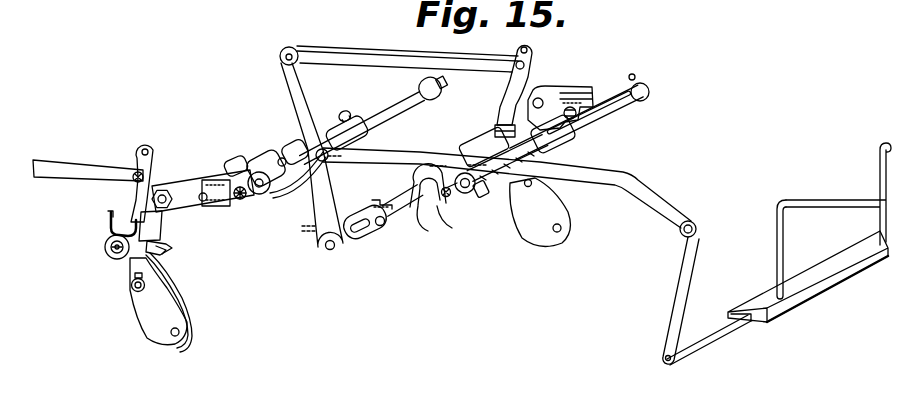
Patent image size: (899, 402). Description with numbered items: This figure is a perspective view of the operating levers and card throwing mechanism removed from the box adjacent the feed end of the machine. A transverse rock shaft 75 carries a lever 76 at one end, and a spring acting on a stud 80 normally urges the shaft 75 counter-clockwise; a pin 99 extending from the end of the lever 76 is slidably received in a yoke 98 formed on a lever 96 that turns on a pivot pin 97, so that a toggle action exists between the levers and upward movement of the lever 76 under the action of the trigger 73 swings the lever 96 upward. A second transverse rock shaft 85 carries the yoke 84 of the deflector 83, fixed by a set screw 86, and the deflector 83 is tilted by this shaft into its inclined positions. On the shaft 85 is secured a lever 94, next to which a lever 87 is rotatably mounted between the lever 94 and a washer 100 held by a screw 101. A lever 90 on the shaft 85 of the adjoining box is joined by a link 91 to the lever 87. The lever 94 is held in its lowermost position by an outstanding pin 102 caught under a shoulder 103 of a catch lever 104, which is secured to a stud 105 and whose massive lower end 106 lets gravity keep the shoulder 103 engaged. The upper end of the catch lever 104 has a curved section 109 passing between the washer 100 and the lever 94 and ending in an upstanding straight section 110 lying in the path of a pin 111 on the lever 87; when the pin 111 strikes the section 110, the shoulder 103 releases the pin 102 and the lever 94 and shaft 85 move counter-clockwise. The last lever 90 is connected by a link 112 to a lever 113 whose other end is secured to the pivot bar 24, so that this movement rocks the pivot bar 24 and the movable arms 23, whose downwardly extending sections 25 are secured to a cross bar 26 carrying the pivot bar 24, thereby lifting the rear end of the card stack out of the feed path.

The movable arms 23 is at (842, 200).
The pivot bar 24 is at (724, 336).
The downwardly extending sections 25 is at (777, 241).
The cross bar 26 is at (832, 270).
The trigger member 73 is at (274, 195).
The transverse rock shaft 75 is at (256, 176).
The lever 76 is at (395, 105).
The stud 80 is at (578, 112).
The deflector 83 is at (394, 208).
The yoke 84 is at (432, 213).
The transverse rock shaft 85 is at (392, 214).
The set screw 86 is at (468, 195).
The lever 87 is at (531, 58).
The lever 90 is at (284, 90).
The link 91 is at (378, 48).
The lever 94 is at (162, 247).
The lever 96 is at (181, 185).
The pivot pin 97 is at (152, 178).
The yoke 98 is at (225, 200).
The pin 99 is at (203, 202).
The washer 100 is at (120, 257).
The screw 101 is at (112, 249).
The outstanding pin 102 is at (158, 250).
The shoulder 103 is at (150, 257).
The catch lever 104 is at (130, 300).
The stud 105 is at (138, 291).
The lower end of lever 104 106 is at (178, 345).
The curved section 109 is at (108, 245).
The straight section 110 is at (108, 215).
The pin 111 is at (112, 229).
The link 112 is at (672, 203).
The lever 113 is at (687, 281).